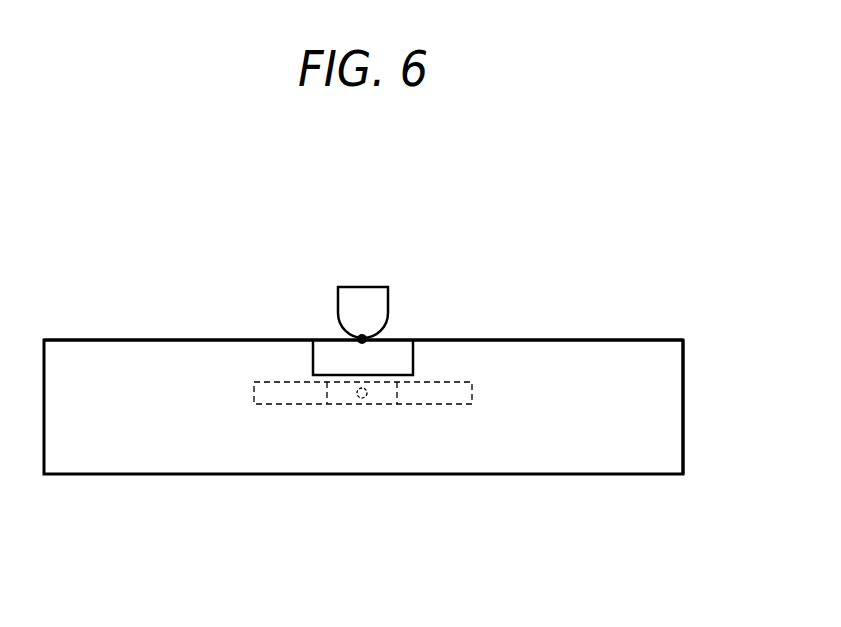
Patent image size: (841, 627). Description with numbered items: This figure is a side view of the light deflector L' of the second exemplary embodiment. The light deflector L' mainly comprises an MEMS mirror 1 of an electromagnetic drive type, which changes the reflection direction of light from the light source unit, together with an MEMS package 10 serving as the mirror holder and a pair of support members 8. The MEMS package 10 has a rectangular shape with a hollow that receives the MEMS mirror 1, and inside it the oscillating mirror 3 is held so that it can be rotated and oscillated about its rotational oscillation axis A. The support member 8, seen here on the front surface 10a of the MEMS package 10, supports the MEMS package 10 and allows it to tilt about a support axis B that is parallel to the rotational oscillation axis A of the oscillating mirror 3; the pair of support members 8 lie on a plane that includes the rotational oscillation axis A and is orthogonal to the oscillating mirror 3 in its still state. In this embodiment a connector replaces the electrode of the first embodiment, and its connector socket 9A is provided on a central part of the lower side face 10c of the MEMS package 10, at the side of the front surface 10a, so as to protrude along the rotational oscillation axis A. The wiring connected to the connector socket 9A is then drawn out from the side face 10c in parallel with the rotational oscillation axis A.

The MEMS package 10 is at (617, 330).
The front surface 10a is at (153, 339).
The lower side face 10c is at (656, 413).
The connector socket 9A is at (312, 368).
The support member 8 is at (362, 287).
The support axis B is at (363, 337).
The MEMS mirror 1 is at (272, 412).
The oscillating mirror 3 is at (345, 404).
The rotational oscillation axis A is at (368, 404).
The light deflector L' is at (568, 258).